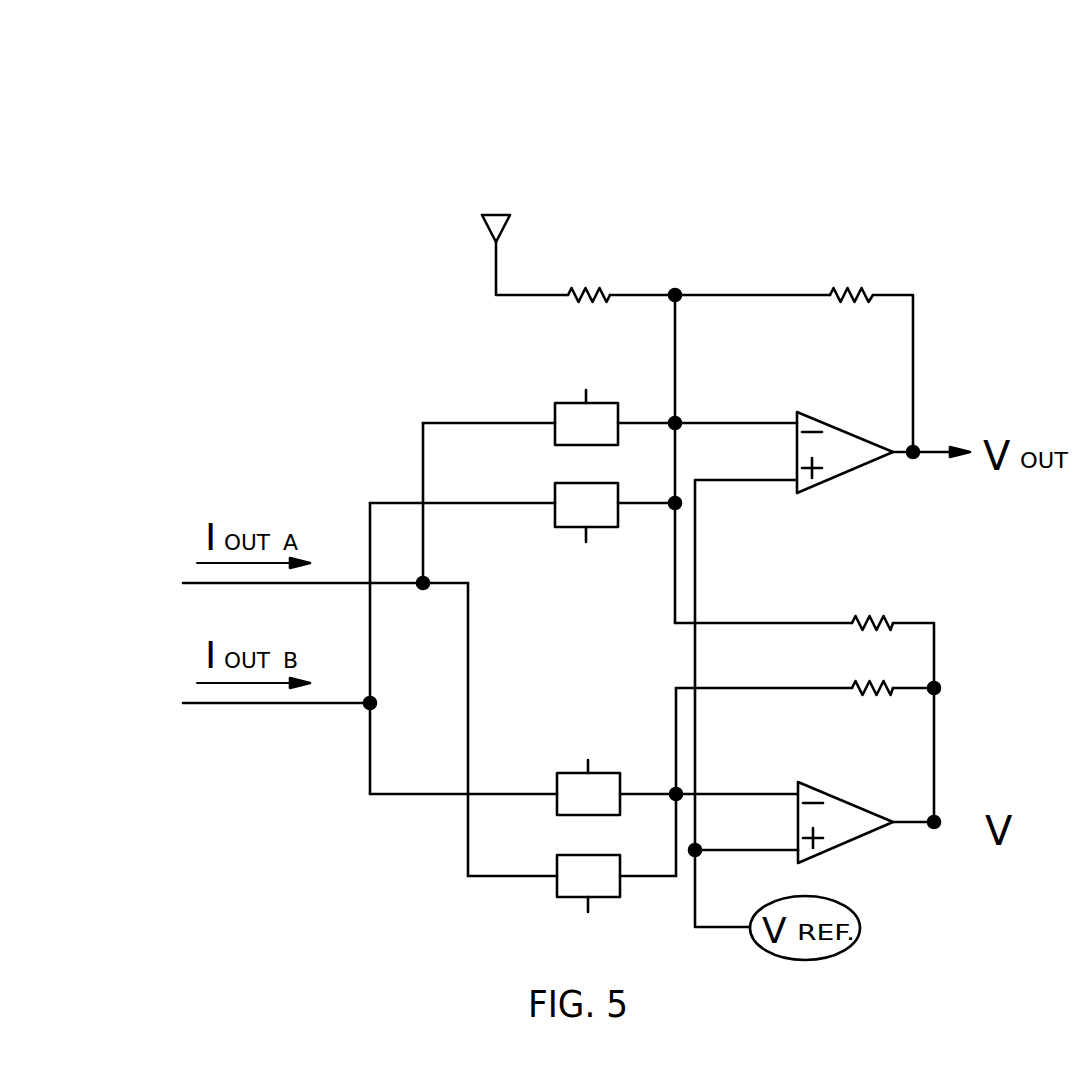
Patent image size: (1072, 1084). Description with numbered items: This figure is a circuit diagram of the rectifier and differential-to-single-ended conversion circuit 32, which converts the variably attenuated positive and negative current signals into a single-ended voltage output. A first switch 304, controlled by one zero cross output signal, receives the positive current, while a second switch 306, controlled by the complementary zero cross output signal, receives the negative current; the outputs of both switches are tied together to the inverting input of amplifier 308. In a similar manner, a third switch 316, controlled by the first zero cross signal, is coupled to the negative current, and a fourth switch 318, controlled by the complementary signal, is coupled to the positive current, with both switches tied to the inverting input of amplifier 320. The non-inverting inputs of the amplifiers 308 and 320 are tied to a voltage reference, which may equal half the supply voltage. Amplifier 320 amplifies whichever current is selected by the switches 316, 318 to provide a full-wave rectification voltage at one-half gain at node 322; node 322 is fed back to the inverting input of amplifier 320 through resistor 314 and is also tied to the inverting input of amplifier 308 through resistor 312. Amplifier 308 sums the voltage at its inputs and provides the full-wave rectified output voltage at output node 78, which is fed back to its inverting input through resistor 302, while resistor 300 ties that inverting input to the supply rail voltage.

The rectifier and differential-to-single-ended conversion circuit 32 is at (764, 220).
The resistor 300 is at (583, 296).
The resistor 302 is at (850, 296).
The first switch (SW1) 304 is at (556, 405).
The second switch (SW2) 306 is at (556, 528).
The amplifier 308 is at (848, 473).
The output node 78 is at (920, 450).
The resistor 312 is at (870, 615).
The resistor 314 is at (878, 695).
The switch (SW3) 316 is at (557, 773).
The switch (SW4) 318 is at (557, 895).
The amplifier 320 is at (845, 845).
The node 322 is at (940, 820).